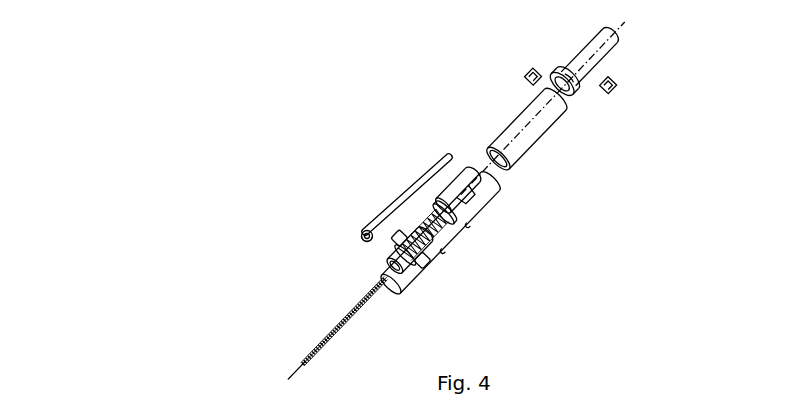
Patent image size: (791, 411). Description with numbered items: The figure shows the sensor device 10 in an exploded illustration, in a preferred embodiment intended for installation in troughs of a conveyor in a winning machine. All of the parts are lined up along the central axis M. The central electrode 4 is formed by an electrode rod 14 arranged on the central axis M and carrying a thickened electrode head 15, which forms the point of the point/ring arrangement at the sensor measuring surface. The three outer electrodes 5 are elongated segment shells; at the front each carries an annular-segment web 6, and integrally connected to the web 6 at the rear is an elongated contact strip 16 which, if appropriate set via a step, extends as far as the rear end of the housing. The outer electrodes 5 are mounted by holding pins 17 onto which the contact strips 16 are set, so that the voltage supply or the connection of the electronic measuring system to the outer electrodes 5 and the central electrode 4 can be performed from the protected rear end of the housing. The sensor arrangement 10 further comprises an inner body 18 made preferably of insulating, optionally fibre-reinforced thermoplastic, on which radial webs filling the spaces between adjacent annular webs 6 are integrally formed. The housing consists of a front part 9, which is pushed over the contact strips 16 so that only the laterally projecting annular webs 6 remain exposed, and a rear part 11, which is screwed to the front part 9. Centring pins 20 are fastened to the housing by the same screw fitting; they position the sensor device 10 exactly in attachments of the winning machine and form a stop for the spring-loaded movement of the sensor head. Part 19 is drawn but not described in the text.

The central point electrode 4 is at (317, 328).
The outer electrodes 5 is at (382, 204).
The annular segment web 6 is at (365, 230).
The front part 9 is at (533, 132).
The sensor device 10 is at (485, 107).
The rear part 11 is at (585, 52).
The electrode rod 14 is at (346, 315).
The electrode head 15 is at (296, 354).
The contact strip 16 is at (407, 197).
The holding pins 17 is at (428, 212).
The inner body 18 is at (462, 187).
The hub 19 is at (385, 262).
The centring pins 20 is at (610, 87).
The central axis M is at (486, 168).